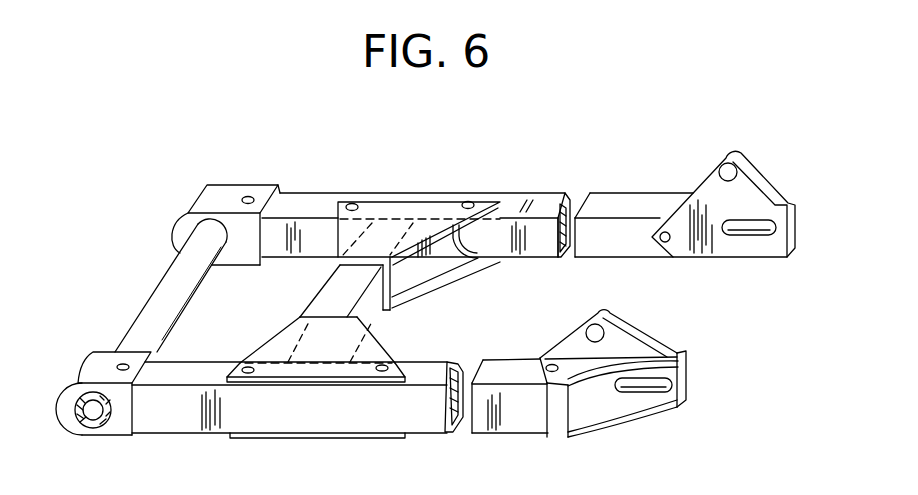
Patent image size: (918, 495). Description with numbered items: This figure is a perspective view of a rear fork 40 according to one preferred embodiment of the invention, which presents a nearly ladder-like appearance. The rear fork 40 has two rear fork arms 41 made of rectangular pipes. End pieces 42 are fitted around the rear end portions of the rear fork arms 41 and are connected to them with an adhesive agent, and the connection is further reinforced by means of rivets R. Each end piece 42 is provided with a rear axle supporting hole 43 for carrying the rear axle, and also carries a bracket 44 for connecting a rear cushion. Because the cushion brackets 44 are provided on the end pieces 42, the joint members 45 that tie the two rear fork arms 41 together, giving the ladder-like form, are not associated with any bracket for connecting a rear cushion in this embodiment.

The rear fork 40 is at (500, 160).
The rear fork arm 41 is at (623, 198).
The end piece 42 is at (715, 252).
The rear axle supporting hole 43 is at (760, 237).
The bracket 44 is at (710, 188).
The joint member 45 is at (415, 200).
The rivet R is at (662, 245).